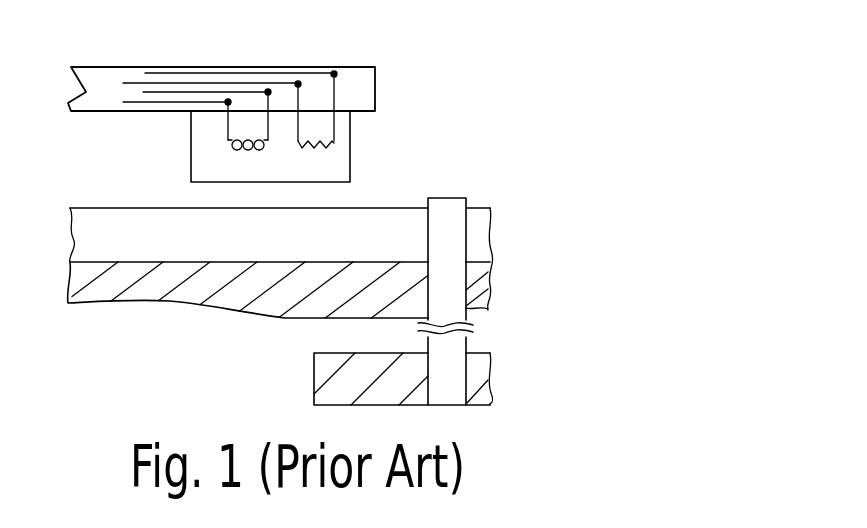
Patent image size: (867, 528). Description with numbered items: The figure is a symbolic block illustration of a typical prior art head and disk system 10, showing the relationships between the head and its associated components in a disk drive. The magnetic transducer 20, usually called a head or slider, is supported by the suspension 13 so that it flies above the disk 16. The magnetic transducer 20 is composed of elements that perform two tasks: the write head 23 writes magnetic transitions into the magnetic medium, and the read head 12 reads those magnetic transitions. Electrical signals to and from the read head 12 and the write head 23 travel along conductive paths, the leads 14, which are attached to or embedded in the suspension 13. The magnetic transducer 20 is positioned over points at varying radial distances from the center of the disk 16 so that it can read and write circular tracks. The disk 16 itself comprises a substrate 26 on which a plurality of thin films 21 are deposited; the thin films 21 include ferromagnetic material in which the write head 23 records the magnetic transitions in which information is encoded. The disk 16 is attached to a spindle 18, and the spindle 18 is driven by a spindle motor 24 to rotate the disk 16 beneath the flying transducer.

The head and disk system 10 is at (477, 98).
The read head 12 is at (347, 147).
The suspension 13 is at (366, 97).
The leads 14 is at (236, 103).
The disk 16 is at (74, 193).
The spindle 18 is at (458, 205).
The magnetic transducer 20 is at (359, 176).
The thin films 21 is at (338, 243).
The write head 23 is at (225, 145).
The spindle motor 24 is at (325, 385).
The substrate 26 is at (102, 293).